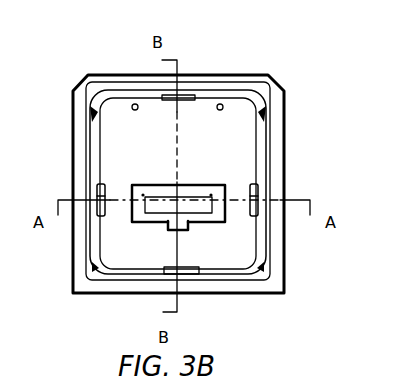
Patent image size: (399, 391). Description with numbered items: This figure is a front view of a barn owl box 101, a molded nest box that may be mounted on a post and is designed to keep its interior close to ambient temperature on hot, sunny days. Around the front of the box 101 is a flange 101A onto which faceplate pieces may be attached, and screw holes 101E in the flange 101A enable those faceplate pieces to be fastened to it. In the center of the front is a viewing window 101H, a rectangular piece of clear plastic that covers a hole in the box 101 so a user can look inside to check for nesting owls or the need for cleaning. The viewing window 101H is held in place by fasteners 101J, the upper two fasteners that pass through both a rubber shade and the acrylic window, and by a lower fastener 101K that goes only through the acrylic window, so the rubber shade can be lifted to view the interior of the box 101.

The barn owl box 101 is at (185, 170).
The flange 101A is at (270, 85).
The screw holes 101E is at (97, 79).
The fasteners 101J is at (142, 192).
The viewing window 101H is at (155, 210).
The lower fastener 101K is at (186, 223).